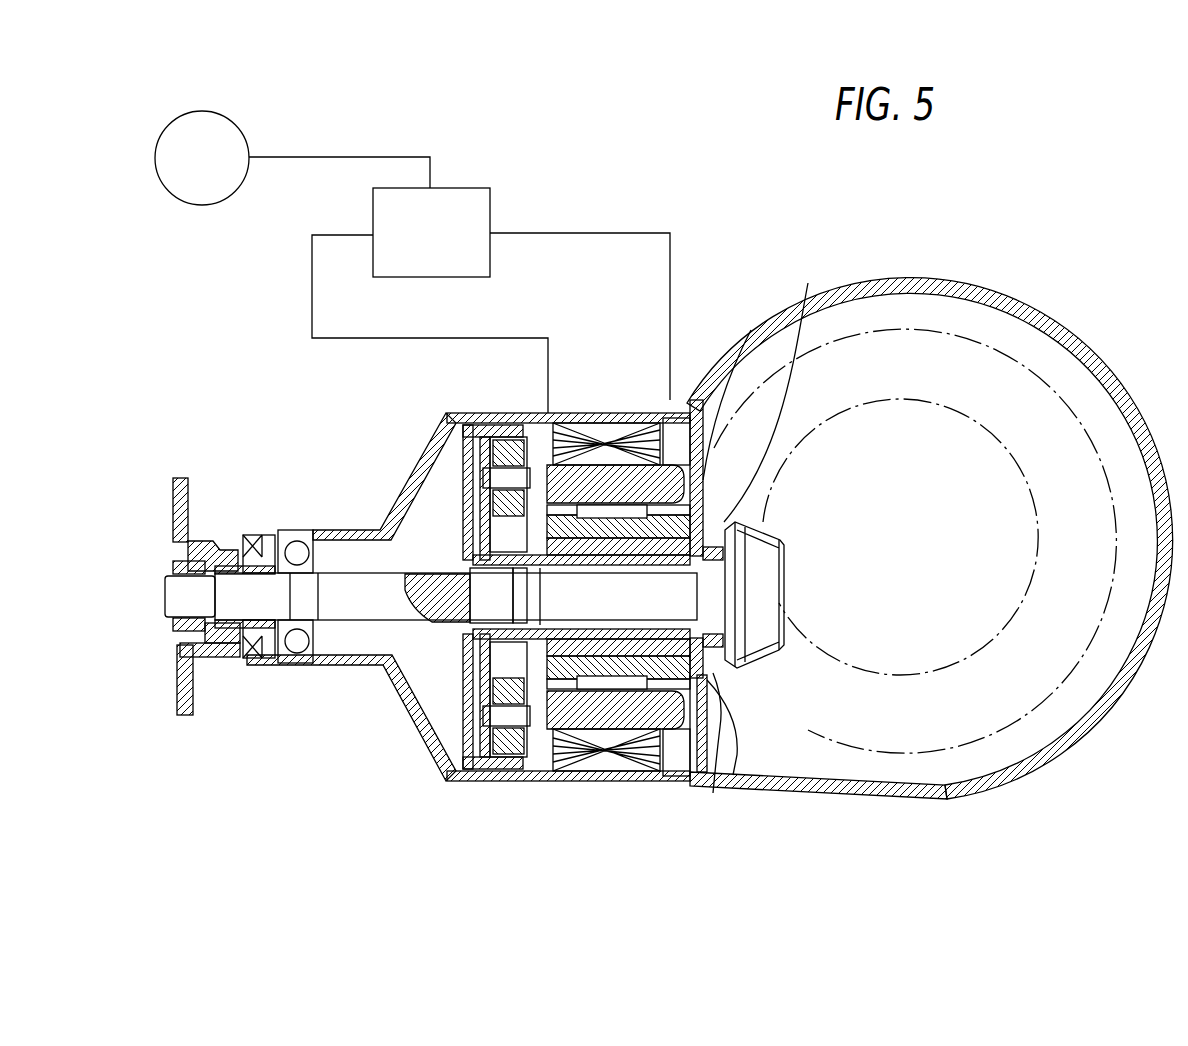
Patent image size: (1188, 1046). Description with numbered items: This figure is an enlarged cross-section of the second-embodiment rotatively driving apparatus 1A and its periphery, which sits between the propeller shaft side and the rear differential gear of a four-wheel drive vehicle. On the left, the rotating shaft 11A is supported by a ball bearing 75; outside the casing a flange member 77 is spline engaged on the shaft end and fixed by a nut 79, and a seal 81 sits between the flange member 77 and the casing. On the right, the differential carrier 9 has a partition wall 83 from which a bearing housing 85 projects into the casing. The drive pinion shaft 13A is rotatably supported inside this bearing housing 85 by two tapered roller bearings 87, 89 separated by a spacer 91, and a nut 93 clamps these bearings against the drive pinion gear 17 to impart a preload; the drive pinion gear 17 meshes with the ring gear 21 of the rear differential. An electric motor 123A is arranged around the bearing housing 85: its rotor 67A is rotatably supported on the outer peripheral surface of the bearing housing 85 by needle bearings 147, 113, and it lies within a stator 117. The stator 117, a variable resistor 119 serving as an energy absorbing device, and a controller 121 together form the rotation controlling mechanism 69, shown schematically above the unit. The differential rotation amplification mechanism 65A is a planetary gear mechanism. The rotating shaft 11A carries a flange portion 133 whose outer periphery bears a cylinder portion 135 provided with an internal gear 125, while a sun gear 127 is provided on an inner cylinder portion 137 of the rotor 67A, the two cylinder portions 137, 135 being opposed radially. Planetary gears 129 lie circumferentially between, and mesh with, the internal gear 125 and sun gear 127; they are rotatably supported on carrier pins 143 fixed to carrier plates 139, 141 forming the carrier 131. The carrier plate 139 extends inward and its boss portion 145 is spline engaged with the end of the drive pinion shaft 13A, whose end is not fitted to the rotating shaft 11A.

The rotatively driving apparatus 1A is at (593, 218).
The differential carrier 9 is at (1040, 318).
The rotating shaft 11A is at (350, 573).
The drive pinion shaft 13A is at (751, 330).
The drive pinion gear 17 is at (762, 524).
The ring gear 21 is at (913, 330).
The differential rotation amplification mechanism 65A is at (455, 433).
The rotor 67A is at (600, 477).
The rotation controlling mechanism 69 is at (457, 188).
The ball bearing 75 is at (295, 531).
The flange member 77 is at (178, 478).
The nut 79 is at (172, 556).
The seal 81 is at (248, 535).
The partition wall 83 is at (707, 776).
The bearing housing 85 is at (738, 790).
The tapered roller bearing 87 is at (592, 568).
The tapered roller bearing 89 is at (693, 562).
The spacer 91 is at (648, 560).
The nut 93 is at (540, 568).
The needle bearing 113 is at (663, 565).
The stator 117 is at (648, 452).
The variable resistor 119 is at (393, 210).
The controller 121 is at (228, 134).
The electric motor 123A is at (652, 420).
The internal gear 125 is at (518, 432).
The sun gear 127 is at (528, 572).
The planetary gears 129 is at (547, 430).
The carrier 131 is at (468, 513).
The flange portion 133 is at (467, 533).
The cylinder portion 135 is at (488, 442).
The inner cylinder portion 137 is at (500, 568).
The carrier plate 139 is at (463, 438).
The carrier plate 141 is at (566, 440).
The carrier pins 143 is at (467, 477).
The boss portion 145 is at (420, 578).
The needle bearing 147 is at (597, 562).